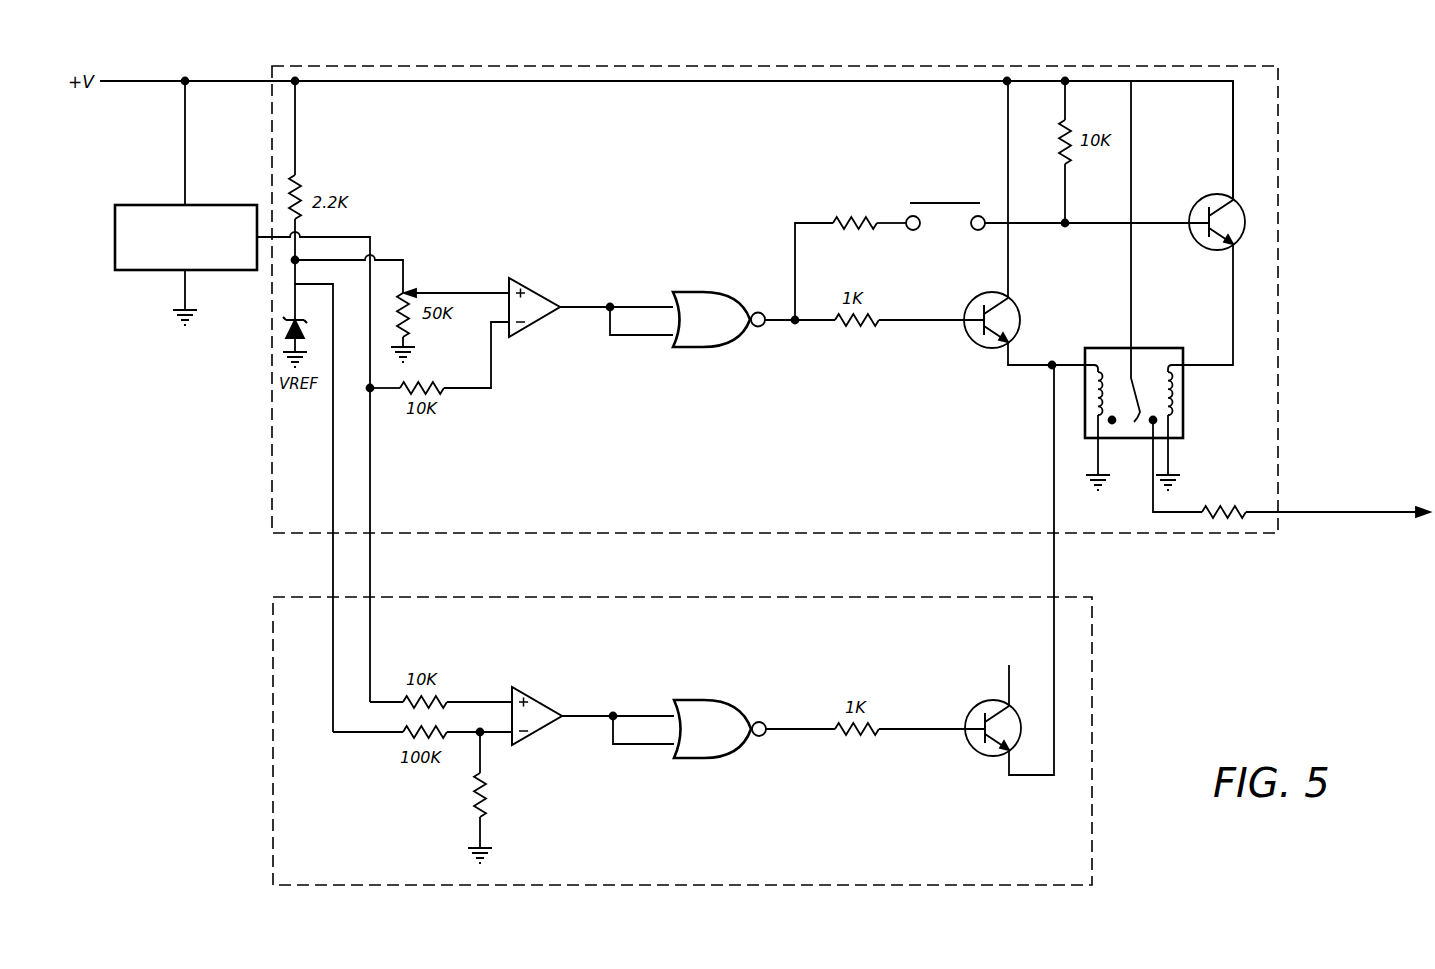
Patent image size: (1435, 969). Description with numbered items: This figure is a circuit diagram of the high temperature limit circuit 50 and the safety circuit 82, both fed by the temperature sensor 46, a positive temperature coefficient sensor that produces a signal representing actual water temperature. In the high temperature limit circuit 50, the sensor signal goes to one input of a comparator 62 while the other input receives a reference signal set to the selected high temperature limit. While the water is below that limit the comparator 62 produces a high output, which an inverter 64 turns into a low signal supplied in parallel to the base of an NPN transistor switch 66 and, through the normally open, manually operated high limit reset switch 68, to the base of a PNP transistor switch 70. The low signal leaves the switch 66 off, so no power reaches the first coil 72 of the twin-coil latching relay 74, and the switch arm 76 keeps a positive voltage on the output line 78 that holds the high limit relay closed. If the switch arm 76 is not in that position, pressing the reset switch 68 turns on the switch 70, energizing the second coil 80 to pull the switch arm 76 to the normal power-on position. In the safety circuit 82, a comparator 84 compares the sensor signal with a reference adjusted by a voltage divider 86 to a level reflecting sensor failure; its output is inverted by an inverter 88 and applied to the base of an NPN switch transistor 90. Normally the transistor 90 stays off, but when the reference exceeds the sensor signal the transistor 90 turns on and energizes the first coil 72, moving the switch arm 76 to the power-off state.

The temperature sensor 46 is at (143, 270).
The high temperature limit circuit 50 is at (270, 478).
The comparator 62 is at (542, 323).
The inverter 64 is at (712, 351).
The NPN transistor switch 66 is at (973, 348).
The high limit reset switch 68 is at (941, 150).
The PNP transistor switch 70 is at (1213, 195).
The first coil 72 is at (1126, 285).
The twin-coil latching relay 74 is at (1118, 348).
The switch arm 76 is at (1142, 432).
The output line 78 is at (1355, 513).
The second coil 80 is at (1151, 368).
The safety circuit 82 is at (273, 798).
The comparator 84 is at (543, 735).
The voltage divider 86 is at (470, 794).
The inverter 88 is at (705, 759).
The NPN switch transistor 90 is at (983, 705).